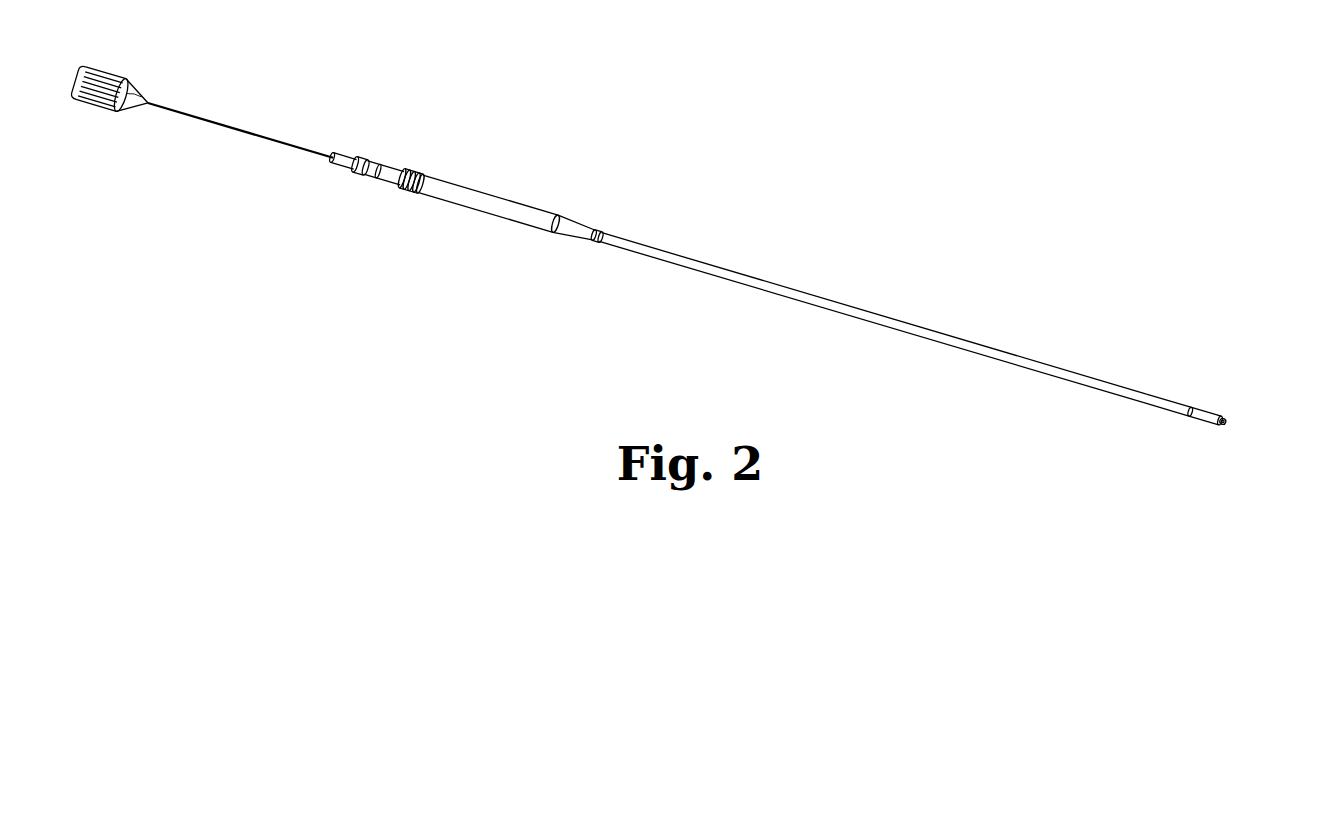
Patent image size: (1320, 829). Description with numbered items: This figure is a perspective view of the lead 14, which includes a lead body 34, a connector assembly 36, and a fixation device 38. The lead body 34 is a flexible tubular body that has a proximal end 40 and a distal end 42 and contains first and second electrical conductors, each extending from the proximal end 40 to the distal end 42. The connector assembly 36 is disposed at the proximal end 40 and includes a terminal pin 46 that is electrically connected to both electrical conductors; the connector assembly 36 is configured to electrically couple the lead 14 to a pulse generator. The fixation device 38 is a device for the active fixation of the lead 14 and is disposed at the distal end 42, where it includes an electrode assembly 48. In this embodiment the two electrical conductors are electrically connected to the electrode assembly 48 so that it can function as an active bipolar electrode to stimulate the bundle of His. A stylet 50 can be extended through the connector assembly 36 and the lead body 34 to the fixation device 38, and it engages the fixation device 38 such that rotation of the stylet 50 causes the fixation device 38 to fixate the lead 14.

The lead 14 is at (961, 106).
The lead body 34 is at (880, 314).
The connector assembly 36 is at (478, 190).
The fixation device 38 is at (1214, 407).
The proximal end 40 is at (368, 206).
The distal end 42 is at (1149, 436).
The terminal pin 46 is at (343, 153).
The electrode assembly 48 is at (1230, 425).
The stylet 50 is at (228, 127).